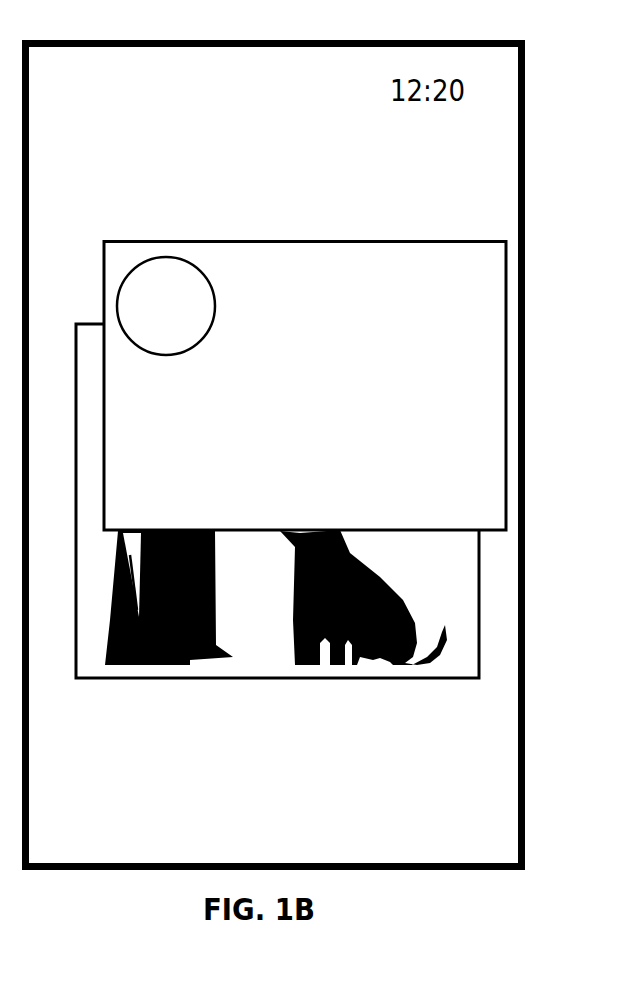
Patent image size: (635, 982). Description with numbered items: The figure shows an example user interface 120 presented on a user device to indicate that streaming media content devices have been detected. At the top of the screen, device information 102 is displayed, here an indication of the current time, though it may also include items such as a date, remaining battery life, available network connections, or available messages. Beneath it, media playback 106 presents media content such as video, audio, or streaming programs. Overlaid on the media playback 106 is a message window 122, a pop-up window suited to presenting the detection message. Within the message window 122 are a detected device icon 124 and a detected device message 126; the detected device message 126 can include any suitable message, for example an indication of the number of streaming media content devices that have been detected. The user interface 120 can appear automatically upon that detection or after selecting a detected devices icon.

The device information 102 is at (430, 72).
The user interface 120 is at (95, 94).
The media playback 106 is at (450, 608).
The message window 122 is at (480, 322).
The detected device icon 124 is at (185, 288).
The detected device message 126 is at (468, 410).